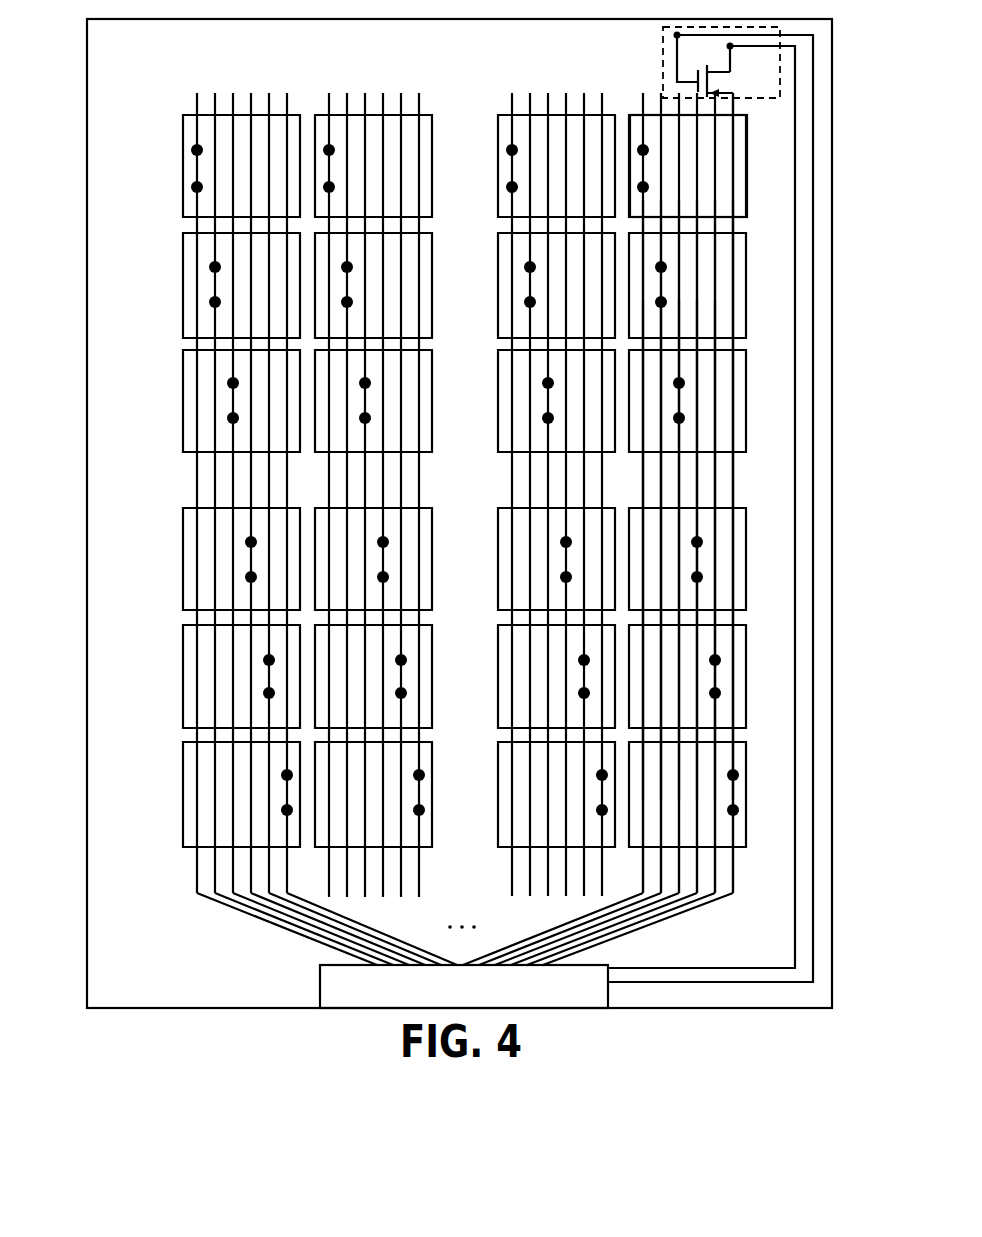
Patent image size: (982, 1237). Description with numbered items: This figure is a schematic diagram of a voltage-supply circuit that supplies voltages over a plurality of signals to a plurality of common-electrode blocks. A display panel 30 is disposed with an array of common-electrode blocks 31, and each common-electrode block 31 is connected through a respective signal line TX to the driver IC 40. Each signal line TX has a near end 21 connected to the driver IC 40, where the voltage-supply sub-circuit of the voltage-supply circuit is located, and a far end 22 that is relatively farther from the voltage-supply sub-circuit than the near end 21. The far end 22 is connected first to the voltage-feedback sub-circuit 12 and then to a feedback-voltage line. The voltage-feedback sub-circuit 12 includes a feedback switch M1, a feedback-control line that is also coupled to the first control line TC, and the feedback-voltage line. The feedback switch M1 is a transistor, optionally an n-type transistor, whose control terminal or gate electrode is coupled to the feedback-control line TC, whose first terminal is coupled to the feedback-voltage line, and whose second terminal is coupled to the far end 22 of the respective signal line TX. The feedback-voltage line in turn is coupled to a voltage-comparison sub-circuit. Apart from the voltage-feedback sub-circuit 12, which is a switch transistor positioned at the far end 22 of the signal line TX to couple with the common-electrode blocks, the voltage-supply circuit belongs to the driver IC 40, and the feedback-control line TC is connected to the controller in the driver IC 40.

The voltage-feedback sub-circuit 12 is at (686, 58).
The near end 21 is at (737, 845).
The far end 22 is at (733, 113).
The display panel 30 is at (85, 568).
The common-electrode block 31 is at (743, 163).
The driver IC 40 is at (320, 985).
The feedback switch M1 is at (720, 92).
The signal line TX is at (738, 862).
The first control line TC is at (737, 977).